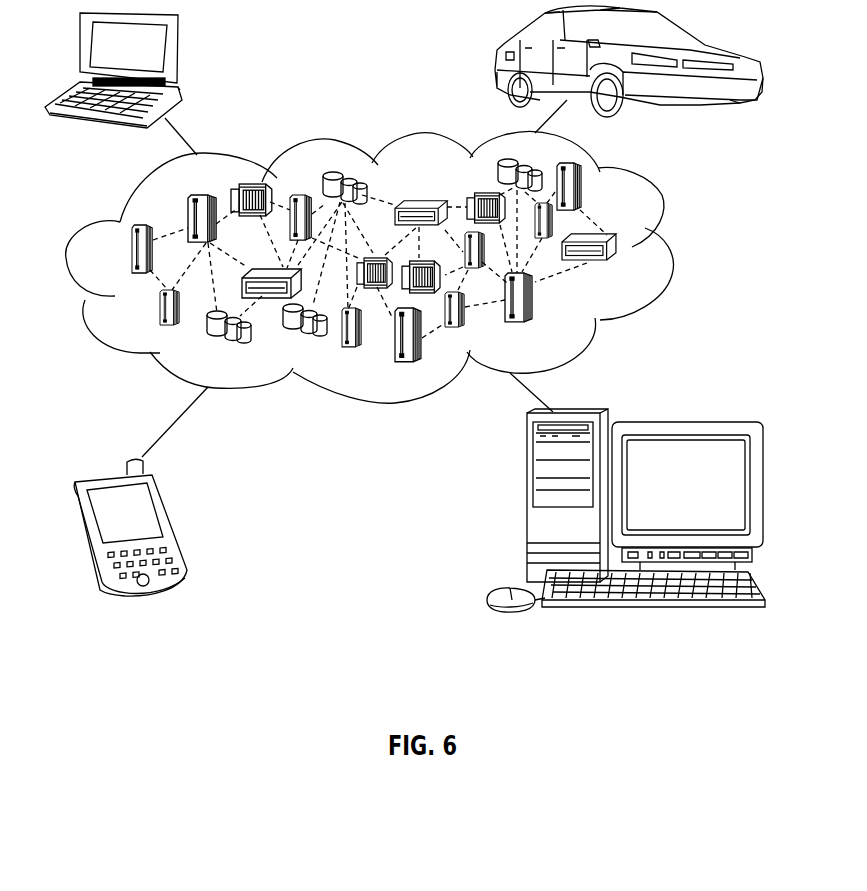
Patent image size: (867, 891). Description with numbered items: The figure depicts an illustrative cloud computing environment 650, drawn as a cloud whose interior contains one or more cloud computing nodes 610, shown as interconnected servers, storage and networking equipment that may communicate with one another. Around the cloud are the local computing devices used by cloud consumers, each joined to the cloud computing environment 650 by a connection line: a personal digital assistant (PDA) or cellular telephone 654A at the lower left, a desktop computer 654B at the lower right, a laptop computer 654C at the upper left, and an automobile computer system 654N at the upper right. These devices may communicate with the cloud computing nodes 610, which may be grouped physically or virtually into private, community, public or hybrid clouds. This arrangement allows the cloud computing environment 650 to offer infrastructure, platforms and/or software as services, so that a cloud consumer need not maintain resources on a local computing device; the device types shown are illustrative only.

The laptop computer 654C is at (178, 50).
The automobile computer system 654N is at (500, 57).
The cloud computing environment 650 is at (655, 215).
The cloud computing nodes 610 is at (637, 265).
The personal digital assistant (PDA) or cellular telephone 654A is at (172, 525).
The desktop computer 654B is at (527, 503).